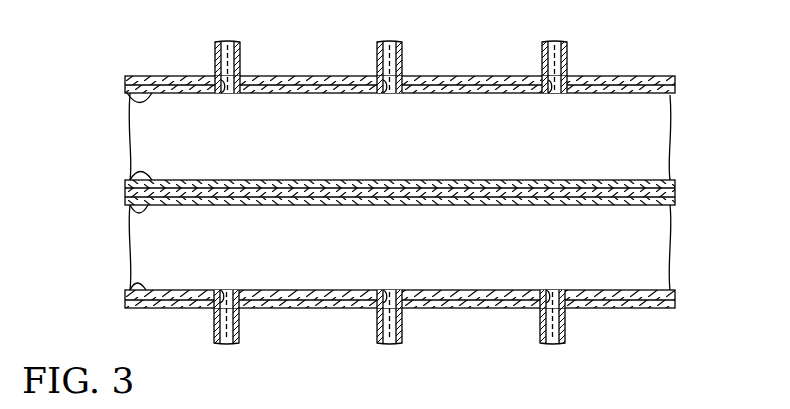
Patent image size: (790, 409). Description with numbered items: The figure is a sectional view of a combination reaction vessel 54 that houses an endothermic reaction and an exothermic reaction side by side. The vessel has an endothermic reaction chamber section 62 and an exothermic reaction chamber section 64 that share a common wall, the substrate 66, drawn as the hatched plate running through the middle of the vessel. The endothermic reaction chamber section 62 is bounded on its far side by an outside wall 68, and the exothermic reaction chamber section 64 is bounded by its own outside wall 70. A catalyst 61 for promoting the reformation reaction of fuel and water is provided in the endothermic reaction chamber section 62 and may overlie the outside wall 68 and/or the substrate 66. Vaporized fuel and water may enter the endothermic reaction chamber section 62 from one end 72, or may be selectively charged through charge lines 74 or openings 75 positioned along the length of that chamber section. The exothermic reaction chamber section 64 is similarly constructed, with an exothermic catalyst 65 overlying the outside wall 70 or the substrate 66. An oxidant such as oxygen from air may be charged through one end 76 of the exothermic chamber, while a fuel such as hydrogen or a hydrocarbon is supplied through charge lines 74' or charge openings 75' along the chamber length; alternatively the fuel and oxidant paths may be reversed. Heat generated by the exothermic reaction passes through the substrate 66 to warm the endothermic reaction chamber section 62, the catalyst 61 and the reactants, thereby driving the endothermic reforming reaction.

The combination reaction vessel 54 is at (678, 66).
The outside wall 68 is at (630, 77).
The substrate 66 is at (668, 192).
The outside wall 70 is at (613, 309).
The charge lines 74 is at (391, 55).
The openings 75 is at (397, 109).
The charge lines 74' is at (389, 328).
The charge openings 75' is at (398, 275).
The catalyst 61 is at (131, 102).
The exothermic catalyst 65 is at (130, 220).
The endothermic reaction chamber section 62 is at (116, 124).
The end 72 is at (148, 142).
The end 76 is at (133, 256).
The exothermic reaction chamber section 64 is at (116, 278).